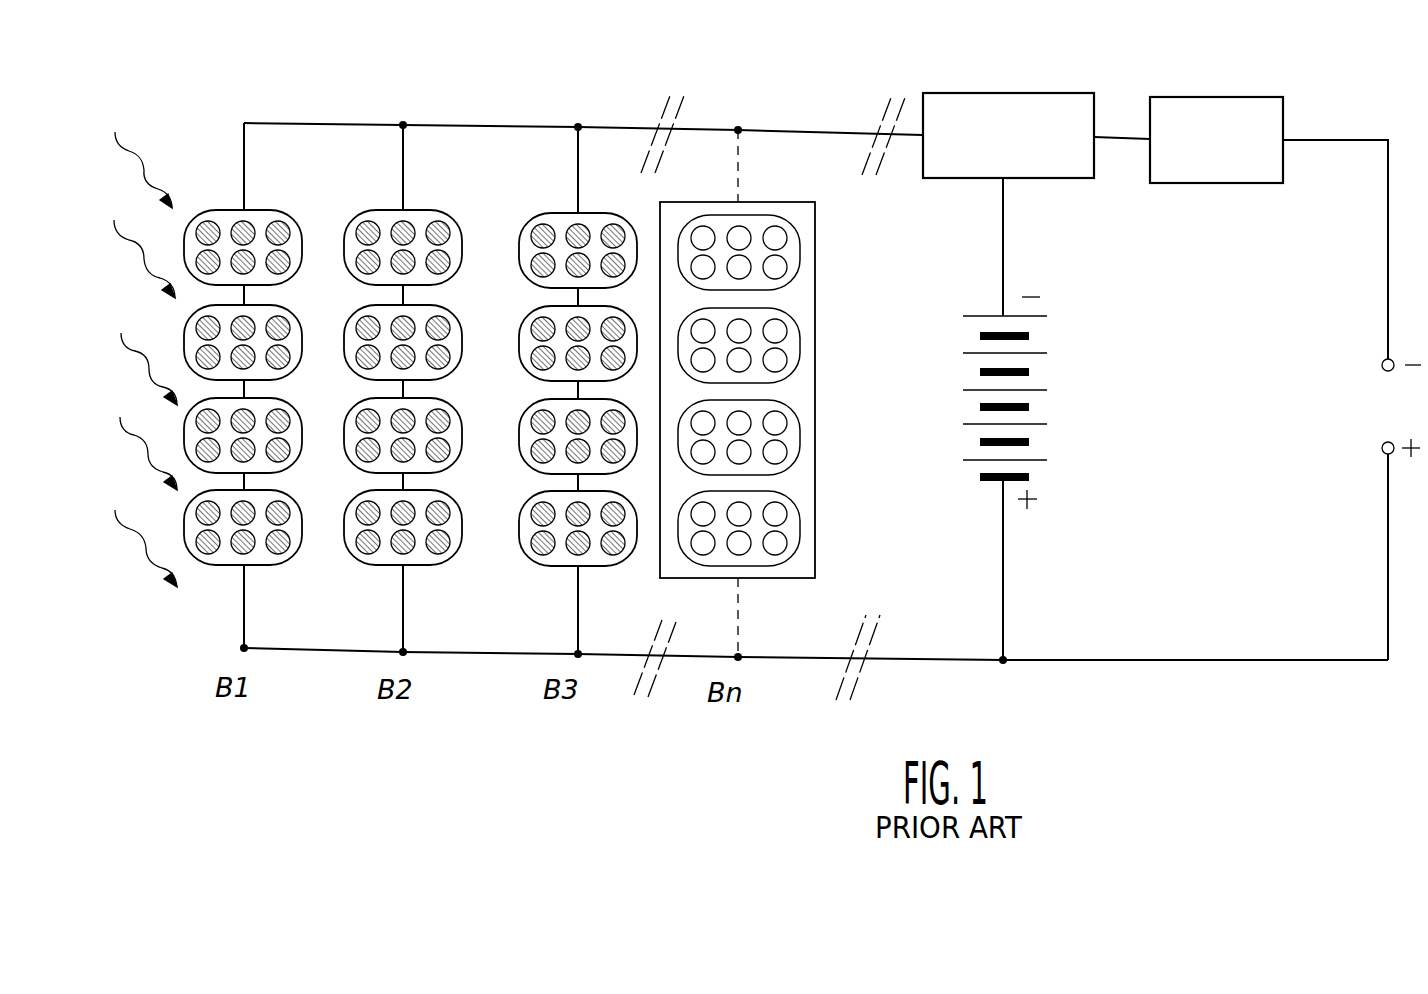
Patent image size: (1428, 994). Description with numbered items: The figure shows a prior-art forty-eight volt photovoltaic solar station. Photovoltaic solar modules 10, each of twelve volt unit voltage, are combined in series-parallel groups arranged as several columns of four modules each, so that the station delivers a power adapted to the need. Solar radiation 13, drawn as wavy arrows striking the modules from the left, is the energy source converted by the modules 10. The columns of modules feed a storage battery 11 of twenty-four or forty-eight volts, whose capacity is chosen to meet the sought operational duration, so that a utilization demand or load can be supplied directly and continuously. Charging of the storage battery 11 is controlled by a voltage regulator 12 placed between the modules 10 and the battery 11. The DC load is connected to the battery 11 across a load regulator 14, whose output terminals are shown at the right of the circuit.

The photovoltaic solar module 10 is at (302, 249).
The storage battery 11 is at (1058, 425).
The voltage regulator 12 is at (1010, 103).
The solar radiation 13 is at (146, 160).
The load regulator 14 is at (1226, 108).